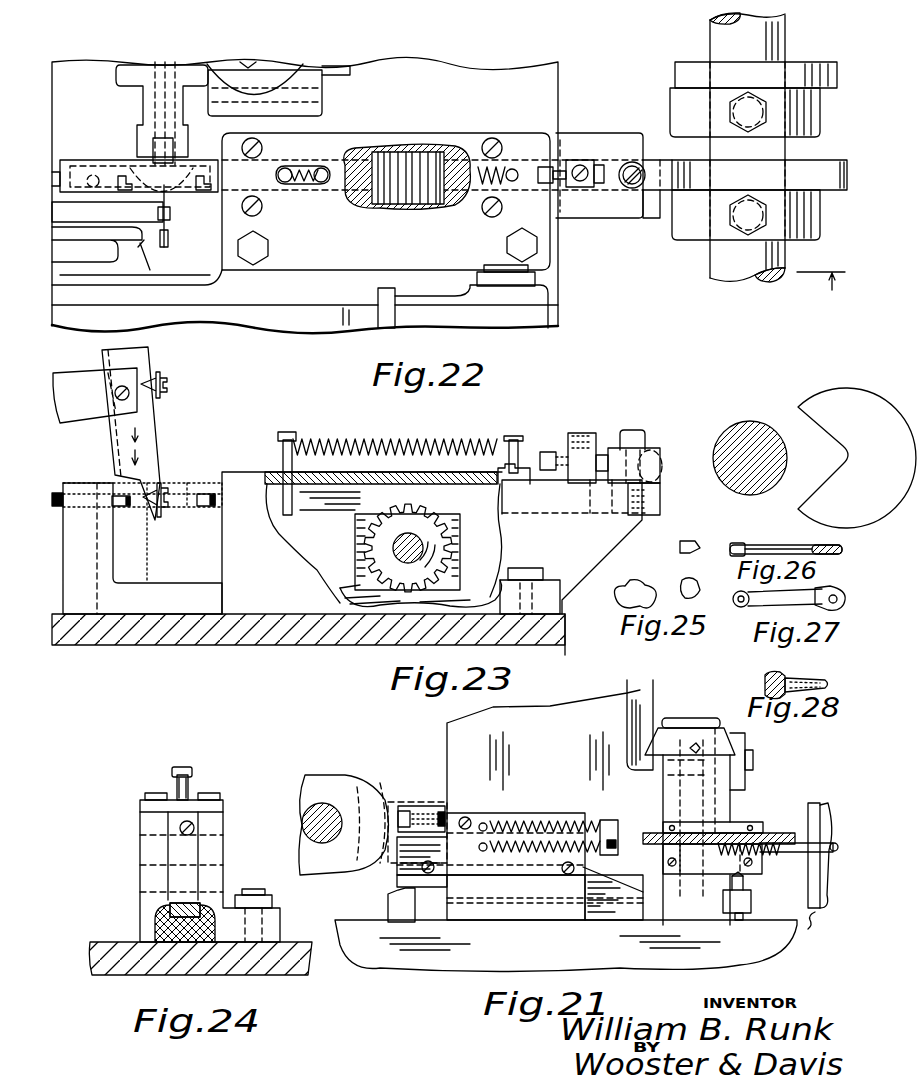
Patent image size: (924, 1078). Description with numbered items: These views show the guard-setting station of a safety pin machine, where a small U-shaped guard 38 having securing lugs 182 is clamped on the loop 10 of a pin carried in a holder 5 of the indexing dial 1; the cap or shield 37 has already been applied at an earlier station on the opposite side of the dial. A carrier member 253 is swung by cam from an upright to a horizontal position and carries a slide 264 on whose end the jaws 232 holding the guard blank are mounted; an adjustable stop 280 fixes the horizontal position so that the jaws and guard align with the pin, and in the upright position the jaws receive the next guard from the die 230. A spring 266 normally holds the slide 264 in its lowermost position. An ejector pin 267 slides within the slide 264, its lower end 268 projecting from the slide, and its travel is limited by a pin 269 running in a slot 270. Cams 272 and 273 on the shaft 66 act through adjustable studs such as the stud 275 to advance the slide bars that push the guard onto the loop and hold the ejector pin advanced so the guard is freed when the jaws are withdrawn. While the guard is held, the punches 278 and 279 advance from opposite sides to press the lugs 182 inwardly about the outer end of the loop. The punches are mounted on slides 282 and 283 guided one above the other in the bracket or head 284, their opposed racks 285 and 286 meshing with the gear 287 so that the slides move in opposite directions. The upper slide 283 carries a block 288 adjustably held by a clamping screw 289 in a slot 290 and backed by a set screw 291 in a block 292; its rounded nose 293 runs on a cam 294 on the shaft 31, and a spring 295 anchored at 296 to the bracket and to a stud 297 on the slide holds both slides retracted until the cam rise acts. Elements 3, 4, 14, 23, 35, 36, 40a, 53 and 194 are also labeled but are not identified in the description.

In FIG. 23, the dial 1 is at (152, 433).
In FIG. 21, the dial 1 is at (812, 918).
In FIG. 23, the feed slide 3 is at (100, 402).
In FIG. 22, the blade carrier 4 is at (107, 213).
In FIG. 23, the blade carrier 4 is at (170, 460).
In FIG. 21, the blade carrier 4 is at (812, 893).
In FIG. 23, the holder 5 is at (160, 486).
In FIG. 21, the holder 5 is at (816, 852).
In FIG. 26, the loop 10 is at (734, 554).
In FIG. 27, the loop 10 is at (740, 606).
In FIG. 28, the loop 10 is at (826, 684).
In FIG. 23, the base plate 14 is at (566, 628).
In FIG. 24, the base plate 14 is at (298, 943).
In FIG. 21, the base plate 14 is at (738, 943).
In FIG. 22, the section line 23 is at (80, 276).
In FIG. 22, the shaft 31 is at (742, 270).
In FIG. 23, the shaft 31 is at (773, 483).
In FIG. 22, the bar 35 is at (268, 307).
In FIG. 22, the bracket 36 is at (375, 290).
In FIG. 26, the cap or shield 37 is at (826, 545).
In FIG. 27, the cap or shield 37 is at (832, 589).
In FIG. 25, the guard 38 is at (681, 585).
In FIG. 28, the guard 38 is at (763, 686).
In FIG. 22, the pin tip 40a is at (170, 228).
In FIG. 23, the pin tip 40a is at (172, 387).
In FIG. 21, the pin tip 40a is at (812, 846).
In FIG. 21, the stud 53 is at (744, 862).
In FIG. 21, the shaft 66 is at (318, 802).
In FIG. 25, the securing lugs 182 is at (684, 595).
In FIG. 28, the securing lugs 182 is at (800, 691).
In FIG. 25, the clip body 194 is at (630, 588).
In FIG. 21, the die 230 is at (672, 725).
In FIG. 22, the jaws 232 is at (165, 173).
In FIG. 21, the jaws 232 is at (776, 840).
In FIG. 21, the carrier member 253 is at (665, 798).
In FIG. 22, the slide 264 is at (142, 102).
In FIG. 21, the slide 264 is at (762, 843).
In FIG. 21, the spring 266 is at (748, 848).
In FIG. 21, the ejector pin 267 is at (734, 833).
In FIG. 21, the lower end of ejector pin 268 is at (636, 860).
In FIG. 21, the pin 269 is at (690, 905).
In FIG. 21, the slot 270 is at (690, 888).
In FIG. 21, the cam 272 is at (387, 800).
In FIG. 21, the cam 273 is at (373, 790).
In FIG. 21, the adjustable stud 275 is at (408, 833).
In FIG. 22, the punch 278 is at (125, 178).
In FIG. 23, the punch 278 is at (122, 508).
In FIG. 22, the punch 279 is at (203, 178).
In FIG. 23, the punch 279 is at (208, 507).
In FIG. 21, the adjustable stop 280 is at (748, 882).
In FIG. 22, the slide 282 is at (198, 192).
In FIG. 23, the slide 282 is at (472, 590).
In FIG. 24, the slide 282 is at (170, 932).
In FIG. 22, the slide 283 is at (281, 210).
In FIG. 23, the slide 283 is at (325, 500).
In FIG. 24, the slide 283 is at (183, 827).
In FIG. 22, the bracket or head 284 is at (598, 210).
In FIG. 23, the bracket or head 284 is at (628, 540).
In FIG. 24, the bracket or head 284 is at (223, 835).
In FIG. 23, the rack 285 is at (352, 582).
In FIG. 24, the rack 285 is at (170, 910).
In FIG. 23, the rack 286 is at (470, 498).
In FIG. 24, the rack 286 is at (165, 840).
In FIG. 22, the gear 287 is at (427, 145).
In FIG. 23, the gear 287 is at (407, 548).
In FIG. 24, the gear 287 is at (207, 904).
In FIG. 23, the block 288 is at (642, 458).
In FIG. 22, the clamping screw 289 is at (632, 189).
In FIG. 23, the clamping screw 289 is at (635, 430).
In FIG. 22, the slot 290 is at (641, 185).
In FIG. 23, the slot 290 is at (660, 488).
In FIG. 22, the set screw 291 is at (600, 170).
In FIG. 23, the set screw 291 is at (599, 455).
In FIG. 22, the block 292 is at (580, 162).
In FIG. 23, the block 292 is at (568, 450).
In FIG. 22, the rounded nose 293 is at (668, 162).
In FIG. 23, the rounded nose 293 is at (681, 460).
In FIG. 22, the cam 294 is at (759, 175).
In FIG. 23, the cam 294 is at (812, 422).
In FIG. 22, the spring 295 is at (488, 186).
In FIG. 23, the spring 295 is at (390, 440).
In FIG. 24, the spring 295 is at (192, 772).
In FIG. 22, the spring anchorage on bracket 296 is at (512, 168).
In FIG. 23, the spring anchorage on bracket 296 is at (512, 437).
In FIG. 22, the stud 297 is at (287, 168).
In FIG. 23, the stud 297 is at (283, 448).
In FIG. 24, the stud 297 is at (174, 790).